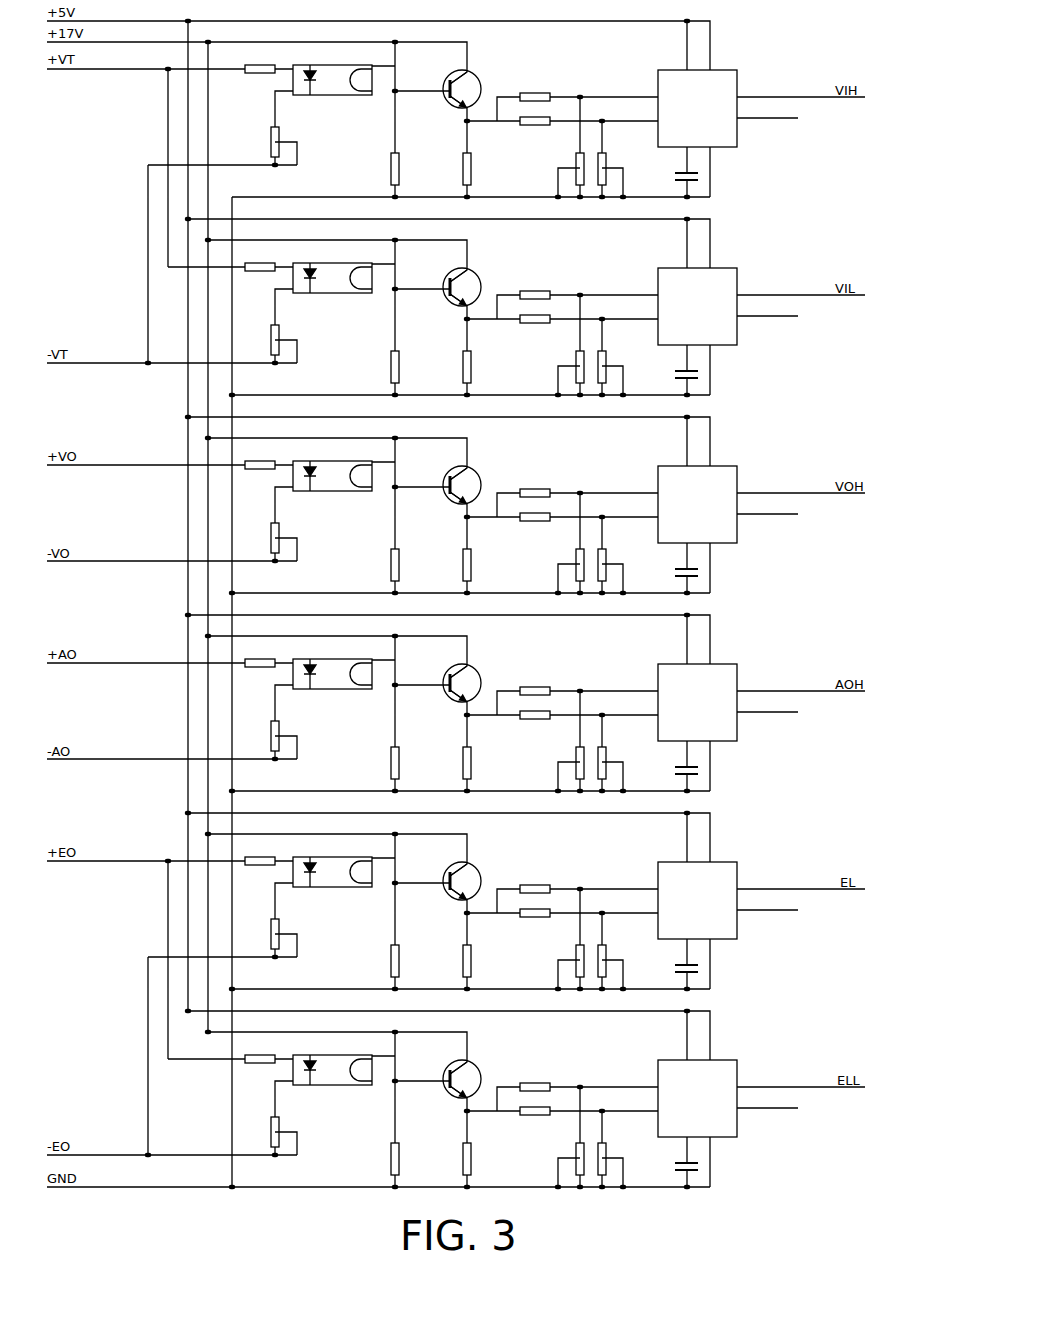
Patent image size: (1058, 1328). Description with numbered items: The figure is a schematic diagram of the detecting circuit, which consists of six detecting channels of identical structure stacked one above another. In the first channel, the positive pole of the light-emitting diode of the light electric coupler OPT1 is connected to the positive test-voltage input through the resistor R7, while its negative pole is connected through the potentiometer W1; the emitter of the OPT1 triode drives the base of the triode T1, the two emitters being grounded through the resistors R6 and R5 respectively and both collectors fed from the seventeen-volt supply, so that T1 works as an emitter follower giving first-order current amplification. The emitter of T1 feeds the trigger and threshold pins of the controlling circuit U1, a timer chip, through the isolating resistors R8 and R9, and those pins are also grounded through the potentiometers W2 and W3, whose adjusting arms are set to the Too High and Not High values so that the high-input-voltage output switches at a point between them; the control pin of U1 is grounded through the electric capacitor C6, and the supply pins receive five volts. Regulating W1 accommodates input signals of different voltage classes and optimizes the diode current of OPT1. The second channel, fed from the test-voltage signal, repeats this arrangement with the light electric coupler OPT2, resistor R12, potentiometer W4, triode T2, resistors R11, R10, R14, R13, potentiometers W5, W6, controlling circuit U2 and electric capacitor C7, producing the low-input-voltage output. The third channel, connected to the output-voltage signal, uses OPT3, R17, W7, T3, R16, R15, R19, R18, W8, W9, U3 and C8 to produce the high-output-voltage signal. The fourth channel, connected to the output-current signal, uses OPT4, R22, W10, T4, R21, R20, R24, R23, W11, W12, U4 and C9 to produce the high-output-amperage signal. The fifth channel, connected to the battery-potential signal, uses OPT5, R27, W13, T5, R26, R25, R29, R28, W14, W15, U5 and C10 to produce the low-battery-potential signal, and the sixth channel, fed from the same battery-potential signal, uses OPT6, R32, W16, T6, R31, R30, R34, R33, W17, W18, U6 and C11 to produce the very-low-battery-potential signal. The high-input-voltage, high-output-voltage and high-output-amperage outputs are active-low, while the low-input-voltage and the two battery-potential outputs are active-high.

The resistor R7 is at (260, 61).
The light electric coupler OPT1 is at (332, 72).
The potentiometer W1 is at (286, 139).
The triode T1 is at (453, 86).
The resistor R6 is at (404, 163).
The resistor R5 is at (477, 163).
The resistor R9 is at (529, 90).
The resistor R8 is at (529, 130).
The potentiometer W2 is at (568, 169).
The potentiometer W3 is at (613, 169).
The controlling circuit U1 is at (713, 107).
The electric capacitor C6 is at (677, 170).
The resistor R12 is at (260, 259).
The light electric coupler OPT2 is at (332, 270).
The potentiometer W4 is at (286, 337).
The triode T2 is at (453, 284).
The resistor R11 is at (409, 361).
The resistor R10 is at (482, 361).
The resistor R14 is at (529, 288).
The resistor R13 is at (529, 328).
The potentiometer W5 is at (568, 367).
The potentiometer W6 is at (613, 367).
The controlling circuit U2 is at (713, 305).
The electric capacitor C7 is at (677, 368).
The resistor R17 is at (260, 457).
The light electric coupler OPT3 is at (332, 468).
The potentiometer W7 is at (286, 535).
The triode T3 is at (453, 482).
The resistor R16 is at (409, 559).
The resistor R15 is at (482, 559).
The resistor R19 is at (529, 486).
The resistor R18 is at (529, 526).
The potentiometer W8 is at (568, 565).
The potentiometer W9 is at (613, 565).
The controlling circuit U3 is at (713, 503).
The electric capacitor C8 is at (677, 566).
The resistor R22 is at (260, 655).
The light electric coupler OPT4 is at (332, 666).
The potentiometer W10 is at (290, 733).
The triode T4 is at (453, 680).
The resistor R21 is at (409, 757).
The resistor R20 is at (482, 757).
The resistor R24 is at (529, 684).
The resistor R23 is at (529, 724).
The potentiometer W11 is at (567, 763).
The potentiometer W12 is at (617, 763).
The controlling circuit U4 is at (713, 701).
The electric capacitor C9 is at (677, 764).
The resistor R27 is at (260, 853).
The light electric coupler OPT5 is at (332, 864).
The potentiometer W13 is at (290, 931).
The triode T5 is at (453, 878).
The resistor R26 is at (409, 955).
The resistor R25 is at (482, 955).
The resistor R29 is at (529, 882).
The resistor R28 is at (529, 922).
The potentiometer W14 is at (567, 961).
The potentiometer W15 is at (617, 961).
The controlling circuit U5 is at (713, 899).
The electric capacitor C10 is at (676, 962).
The resistor R32 is at (260, 1051).
The light electric coupler OPT6 is at (332, 1062).
The potentiometer W16 is at (290, 1129).
The triode T6 is at (453, 1076).
The resistor R31 is at (409, 1153).
The resistor R30 is at (482, 1153).
The resistor R34 is at (529, 1080).
The resistor R33 is at (529, 1120).
The potentiometer W17 is at (567, 1159).
The potentiometer W18 is at (617, 1159).
The controlling circuit U6 is at (713, 1097).
The electric capacitor C11 is at (676, 1160).